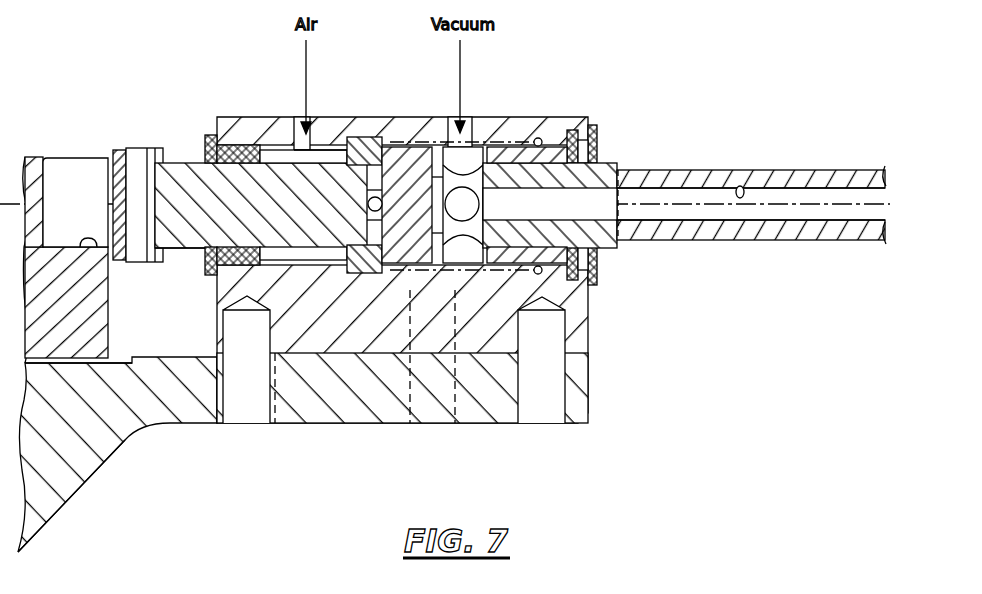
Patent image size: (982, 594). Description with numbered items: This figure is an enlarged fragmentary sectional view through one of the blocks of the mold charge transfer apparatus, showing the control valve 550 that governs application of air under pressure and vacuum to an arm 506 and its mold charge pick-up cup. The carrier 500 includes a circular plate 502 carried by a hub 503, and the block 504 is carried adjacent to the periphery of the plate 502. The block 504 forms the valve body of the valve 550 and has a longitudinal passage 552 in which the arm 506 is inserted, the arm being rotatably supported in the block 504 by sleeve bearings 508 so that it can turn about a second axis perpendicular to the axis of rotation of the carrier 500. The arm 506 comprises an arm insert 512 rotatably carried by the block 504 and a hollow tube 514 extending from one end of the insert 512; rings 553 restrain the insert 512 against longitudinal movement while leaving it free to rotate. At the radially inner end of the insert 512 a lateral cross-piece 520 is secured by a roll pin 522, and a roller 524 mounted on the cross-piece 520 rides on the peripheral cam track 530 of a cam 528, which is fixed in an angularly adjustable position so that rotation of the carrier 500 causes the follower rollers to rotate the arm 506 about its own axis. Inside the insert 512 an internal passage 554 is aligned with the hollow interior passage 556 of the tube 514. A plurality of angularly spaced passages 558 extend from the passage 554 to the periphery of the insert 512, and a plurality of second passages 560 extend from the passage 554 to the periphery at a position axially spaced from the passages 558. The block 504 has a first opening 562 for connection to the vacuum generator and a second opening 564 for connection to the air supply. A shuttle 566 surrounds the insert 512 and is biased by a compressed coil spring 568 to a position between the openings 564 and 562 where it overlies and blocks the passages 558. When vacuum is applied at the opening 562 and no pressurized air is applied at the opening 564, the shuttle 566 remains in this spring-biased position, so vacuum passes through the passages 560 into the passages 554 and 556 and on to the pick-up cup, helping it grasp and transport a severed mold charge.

The carrier 500 is at (100, 473).
The circular plate 502 is at (490, 417).
The hub 503 is at (67, 493).
The block 504 is at (505, 123).
The arm 506 is at (182, 162).
The sleeve bearings 508 is at (249, 150).
The arm insert 512 is at (183, 240).
The hollow tube 514 is at (708, 177).
The lateral cross-piece 520 is at (118, 162).
The roll pin 522 is at (134, 156).
The roller 524 is at (60, 166).
The cam 528 is at (88, 318).
The peripheral cam track 530 is at (97, 247).
The control valve 550 is at (498, 114).
The longitudinal passage 552 is at (336, 135).
The rings 553 is at (208, 138).
The internal passage 554 is at (440, 172).
The hollow interior passage 556 is at (741, 186).
The passage 558 is at (398, 147).
The second passage 560 is at (470, 143).
The first opening 562 is at (433, 147).
The second opening 564 is at (316, 140).
The shuttle 566 is at (355, 262).
The compressed coil spring 568 is at (538, 274).